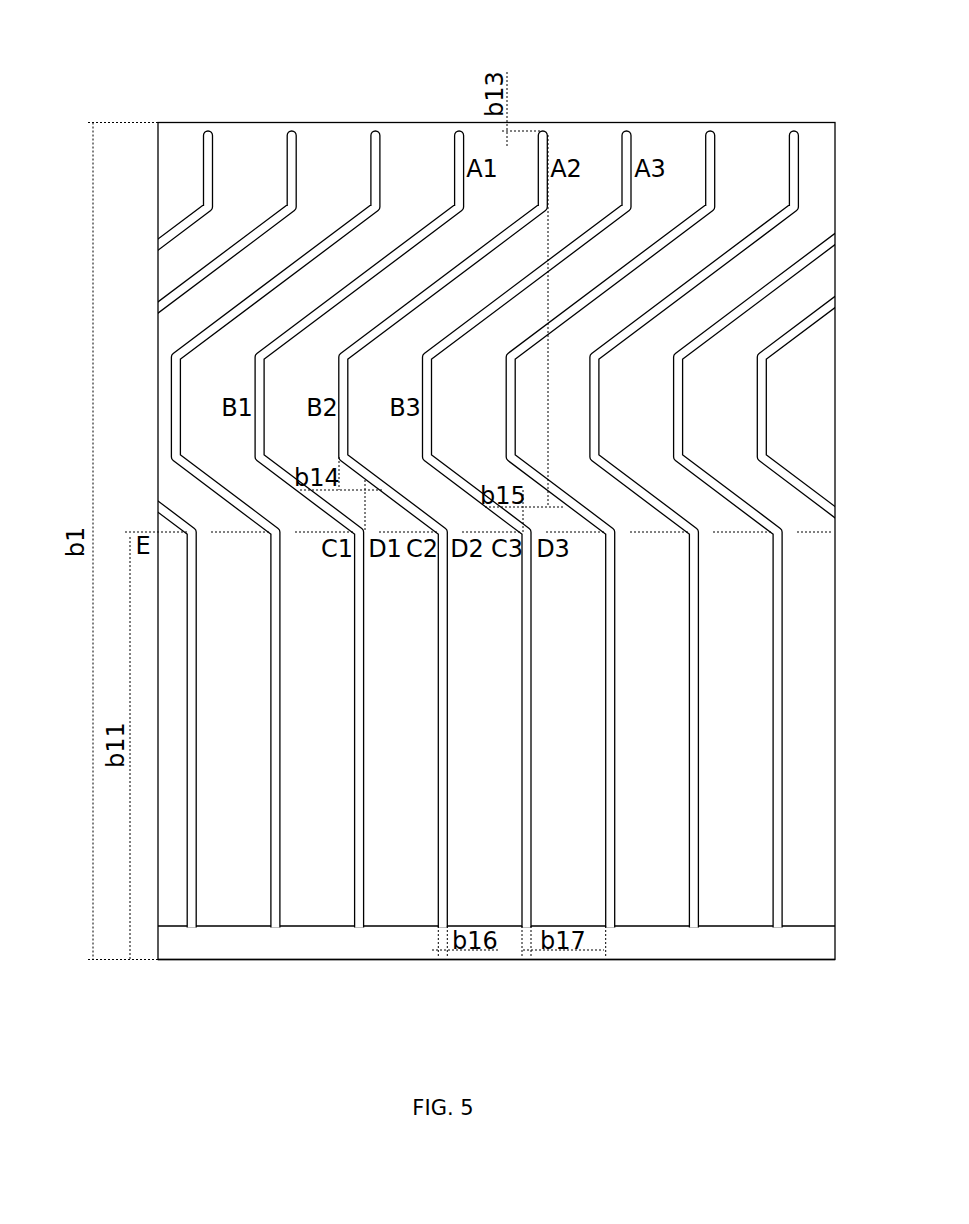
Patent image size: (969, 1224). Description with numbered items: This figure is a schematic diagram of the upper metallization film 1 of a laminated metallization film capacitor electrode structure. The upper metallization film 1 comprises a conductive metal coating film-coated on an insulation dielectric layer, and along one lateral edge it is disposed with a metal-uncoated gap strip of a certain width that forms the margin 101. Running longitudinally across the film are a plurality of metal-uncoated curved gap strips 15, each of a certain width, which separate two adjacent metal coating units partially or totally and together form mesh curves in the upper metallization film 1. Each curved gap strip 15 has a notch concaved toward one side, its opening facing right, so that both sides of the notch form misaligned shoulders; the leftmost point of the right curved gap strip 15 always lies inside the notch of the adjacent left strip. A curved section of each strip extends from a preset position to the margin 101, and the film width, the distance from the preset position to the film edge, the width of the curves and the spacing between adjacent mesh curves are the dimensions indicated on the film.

The upper metallization film 1 is at (757, 147).
The curved gap strip 15 is at (458, 150).
The margin 101 is at (700, 944).